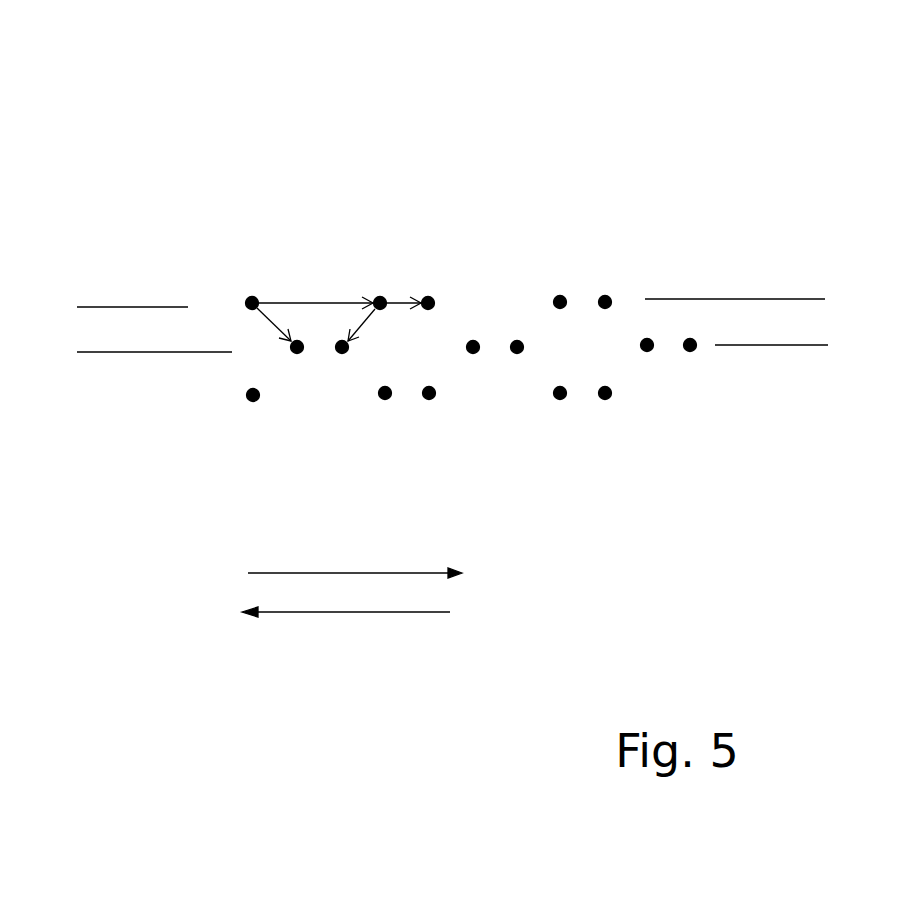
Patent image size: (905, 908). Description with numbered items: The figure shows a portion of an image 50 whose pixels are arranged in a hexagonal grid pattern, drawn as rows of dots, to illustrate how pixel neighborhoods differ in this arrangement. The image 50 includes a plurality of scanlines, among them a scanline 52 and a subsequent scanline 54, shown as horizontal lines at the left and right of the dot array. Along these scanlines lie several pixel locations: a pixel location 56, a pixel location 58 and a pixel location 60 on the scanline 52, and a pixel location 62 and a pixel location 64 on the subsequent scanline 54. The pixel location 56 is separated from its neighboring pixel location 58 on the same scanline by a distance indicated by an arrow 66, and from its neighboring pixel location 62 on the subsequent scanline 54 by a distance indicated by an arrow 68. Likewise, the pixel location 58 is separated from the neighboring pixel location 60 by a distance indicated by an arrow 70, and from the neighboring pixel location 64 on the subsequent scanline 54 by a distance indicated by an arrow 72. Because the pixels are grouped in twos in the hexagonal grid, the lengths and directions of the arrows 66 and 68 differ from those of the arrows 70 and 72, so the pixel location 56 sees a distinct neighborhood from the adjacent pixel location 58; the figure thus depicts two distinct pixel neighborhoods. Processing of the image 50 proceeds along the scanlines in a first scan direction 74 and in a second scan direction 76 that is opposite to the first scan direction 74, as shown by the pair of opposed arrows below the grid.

The image 50 is at (216, 86).
The scanline 52 is at (122, 307).
The subsequent scanline 54 is at (135, 352).
The pixel location 56 is at (250, 299).
The pixel location 58 is at (380, 297).
The pixel location 60 is at (436, 301).
The pixel location 62 is at (294, 356).
The pixel location 64 is at (339, 356).
The arrow 66 is at (308, 302).
The arrow 68 is at (264, 320).
The arrow 70 is at (395, 298).
The arrow 72 is at (368, 322).
The first scan direction 74 is at (357, 573).
The second scan direction 76 is at (338, 612).